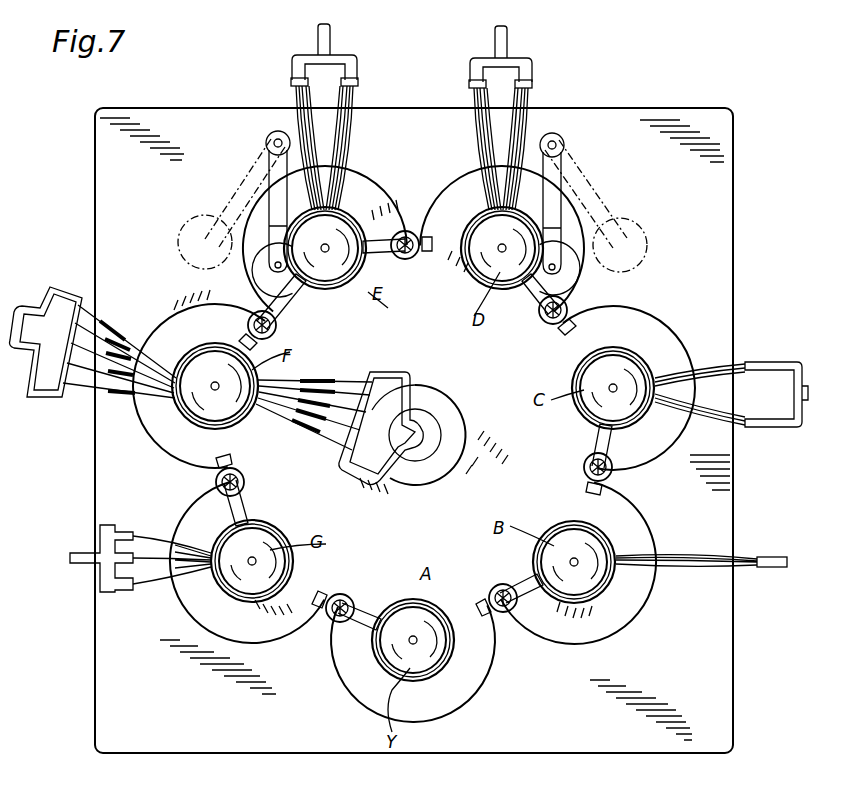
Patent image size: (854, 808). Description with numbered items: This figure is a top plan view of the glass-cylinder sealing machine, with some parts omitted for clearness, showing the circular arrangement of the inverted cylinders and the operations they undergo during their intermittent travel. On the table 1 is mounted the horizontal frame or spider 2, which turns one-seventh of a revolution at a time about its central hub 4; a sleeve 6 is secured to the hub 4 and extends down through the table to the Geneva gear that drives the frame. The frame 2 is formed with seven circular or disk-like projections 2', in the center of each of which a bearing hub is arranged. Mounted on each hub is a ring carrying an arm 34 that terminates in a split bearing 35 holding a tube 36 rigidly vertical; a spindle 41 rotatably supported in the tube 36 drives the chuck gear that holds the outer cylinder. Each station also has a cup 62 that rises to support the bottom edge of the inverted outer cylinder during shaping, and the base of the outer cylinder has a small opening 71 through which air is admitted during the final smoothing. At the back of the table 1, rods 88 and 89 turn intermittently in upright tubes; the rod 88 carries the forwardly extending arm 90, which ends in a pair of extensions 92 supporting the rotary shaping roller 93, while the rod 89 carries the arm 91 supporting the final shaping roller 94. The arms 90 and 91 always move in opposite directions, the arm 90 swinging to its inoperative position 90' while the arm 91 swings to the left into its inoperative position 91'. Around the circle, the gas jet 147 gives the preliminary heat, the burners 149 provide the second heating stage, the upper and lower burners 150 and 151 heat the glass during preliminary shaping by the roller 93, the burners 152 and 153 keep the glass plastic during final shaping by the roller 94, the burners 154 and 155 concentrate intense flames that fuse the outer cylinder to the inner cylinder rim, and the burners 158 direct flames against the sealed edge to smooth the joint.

The table 1 is at (716, 672).
The frame or spider 2 is at (477, 372).
The circular or disk-like projections 2' is at (414, 439).
The central hub 4 is at (452, 447).
The sleeve 6 is at (463, 413).
The arm 34 is at (382, 222).
The split bearing 35 is at (336, 590).
The tube 36 is at (277, 324).
The spindle 41 is at (406, 260).
The cup 62 is at (266, 530).
The opening 71 is at (498, 254).
The rod 88 is at (556, 146).
The rod 89 is at (276, 142).
The arm 90 is at (587, 213).
The inoperative position of arm 90' is at (608, 194).
The arm 91 is at (243, 211).
The inoperative position of arm 91' is at (222, 204).
The extensions 92 is at (640, 256).
The shaping roller 93 is at (644, 228).
The shaping roller 94 is at (258, 270).
The gas jet or burner 147 is at (772, 568).
The burners 149 is at (778, 362).
The upper burners 150 is at (480, 58).
The lower burners 151 is at (472, 70).
The burners 152 is at (298, 70).
The burners 153 is at (292, 84).
The burners 154 is at (118, 330).
The burners 155 is at (360, 382).
The upper burners 158 is at (120, 534).